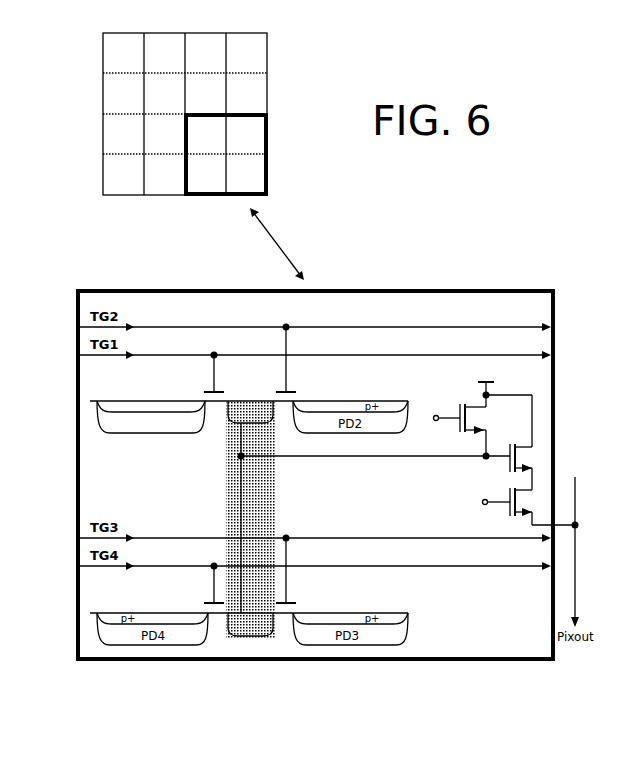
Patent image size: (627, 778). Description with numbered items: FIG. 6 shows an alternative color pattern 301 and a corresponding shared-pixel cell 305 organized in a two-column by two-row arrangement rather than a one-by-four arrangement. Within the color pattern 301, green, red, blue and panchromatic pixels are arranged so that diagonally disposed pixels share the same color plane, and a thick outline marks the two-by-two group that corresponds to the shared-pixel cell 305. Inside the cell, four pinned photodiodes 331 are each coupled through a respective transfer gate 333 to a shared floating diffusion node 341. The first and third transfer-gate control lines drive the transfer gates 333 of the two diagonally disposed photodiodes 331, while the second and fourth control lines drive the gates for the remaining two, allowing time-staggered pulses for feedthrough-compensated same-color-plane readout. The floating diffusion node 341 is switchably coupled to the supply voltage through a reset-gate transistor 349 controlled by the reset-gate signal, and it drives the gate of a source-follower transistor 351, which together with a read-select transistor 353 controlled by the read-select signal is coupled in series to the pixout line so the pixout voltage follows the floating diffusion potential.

The color pattern 301 is at (320, 46).
The shared-pixel cell 305 is at (270, 168).
The photodiode 331 is at (140, 435).
The transfer gate 333 is at (200, 390).
The shared floating diffusion node 341 is at (212, 488).
The reset-gate transistor 349 is at (468, 412).
The source-follower transistor 351 is at (530, 467).
The read-select transistor 353 is at (525, 506).